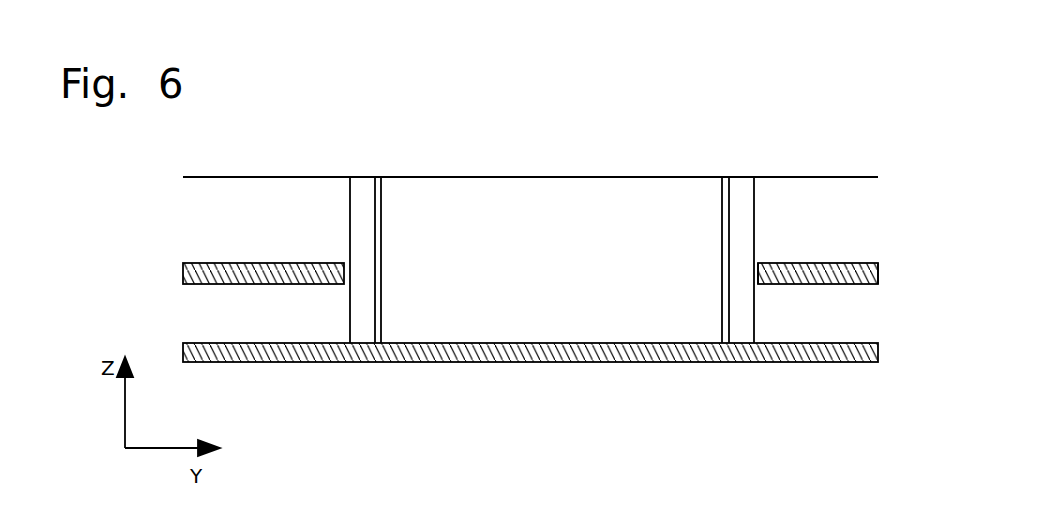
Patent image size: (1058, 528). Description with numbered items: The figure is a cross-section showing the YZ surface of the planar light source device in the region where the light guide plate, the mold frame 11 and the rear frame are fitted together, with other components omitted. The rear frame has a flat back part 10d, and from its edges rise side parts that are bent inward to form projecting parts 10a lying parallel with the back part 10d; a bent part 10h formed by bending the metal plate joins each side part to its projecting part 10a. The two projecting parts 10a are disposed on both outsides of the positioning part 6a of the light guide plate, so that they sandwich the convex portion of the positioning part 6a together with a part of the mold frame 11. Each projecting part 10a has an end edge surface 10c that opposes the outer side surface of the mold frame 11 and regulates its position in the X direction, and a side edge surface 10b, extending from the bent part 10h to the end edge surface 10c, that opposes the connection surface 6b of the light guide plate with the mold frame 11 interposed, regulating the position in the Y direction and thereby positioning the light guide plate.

The positioning part 6a is at (408, 190).
The connection surface 6b is at (377, 221).
The mold frame 11 is at (745, 183).
The projecting part 10a is at (812, 268).
The side edge surface 10b is at (757, 270).
The end edge surface 10c is at (208, 262).
The back part 10d is at (533, 355).
The bent part 10h is at (878, 283).